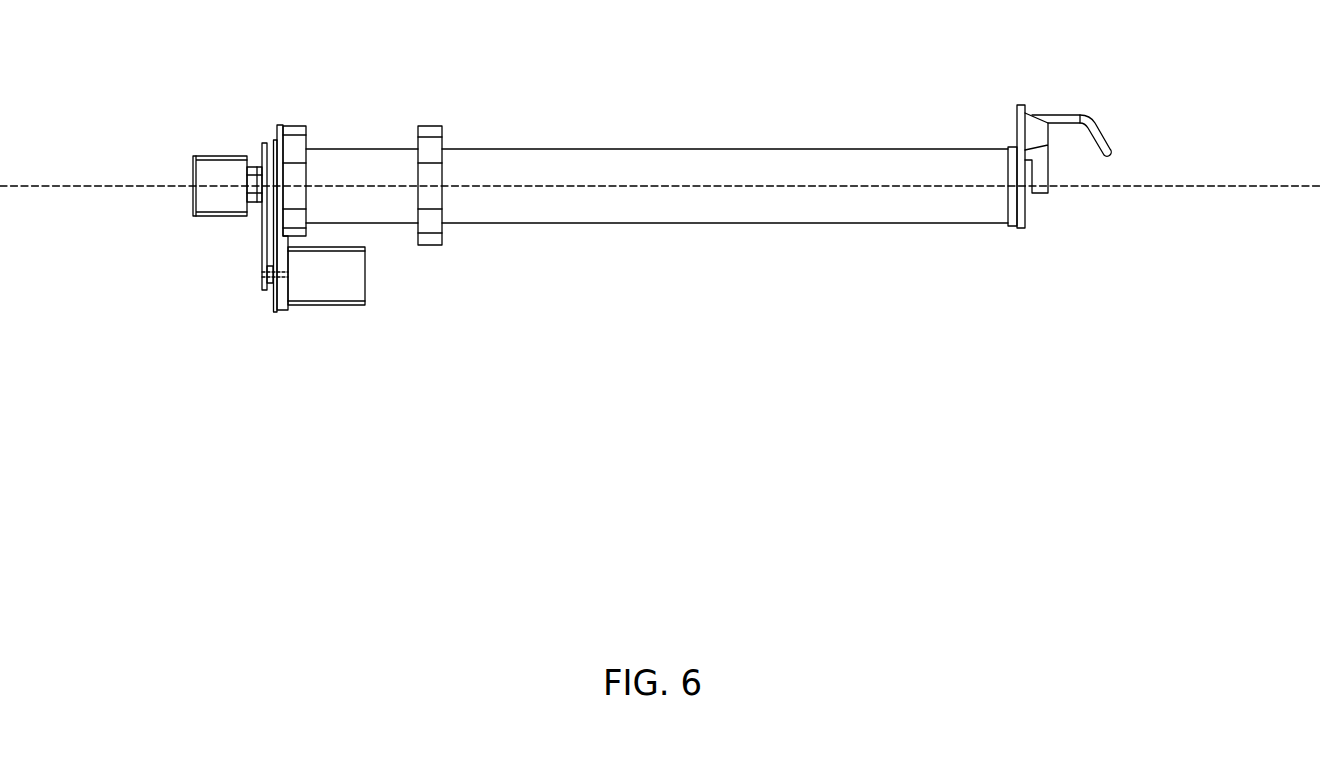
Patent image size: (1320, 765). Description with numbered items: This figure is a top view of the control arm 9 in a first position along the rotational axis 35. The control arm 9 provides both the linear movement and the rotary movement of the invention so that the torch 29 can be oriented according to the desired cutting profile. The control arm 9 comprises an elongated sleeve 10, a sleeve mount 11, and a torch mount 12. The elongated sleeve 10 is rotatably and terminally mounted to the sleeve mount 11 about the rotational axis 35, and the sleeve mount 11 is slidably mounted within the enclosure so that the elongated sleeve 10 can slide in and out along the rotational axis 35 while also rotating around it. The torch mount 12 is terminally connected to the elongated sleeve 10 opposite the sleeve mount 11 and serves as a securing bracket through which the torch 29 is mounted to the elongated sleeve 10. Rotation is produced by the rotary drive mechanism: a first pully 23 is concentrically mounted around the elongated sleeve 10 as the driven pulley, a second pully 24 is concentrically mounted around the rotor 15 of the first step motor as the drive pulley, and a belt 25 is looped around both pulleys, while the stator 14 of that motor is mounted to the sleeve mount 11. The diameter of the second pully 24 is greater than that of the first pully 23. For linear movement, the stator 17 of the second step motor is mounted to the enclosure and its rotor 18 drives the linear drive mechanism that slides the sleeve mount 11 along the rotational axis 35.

The control arm 9 is at (617, 118).
The elongated sleeve 10 is at (630, 218).
The sleeve mount 11 is at (426, 128).
The torch mount 12 is at (1021, 104).
The stator 14 is at (362, 293).
The rotor 15 is at (263, 275).
The stator 17 is at (197, 196).
The rotor 18 is at (250, 183).
The first pully 23 is at (263, 143).
The second pully 24 is at (264, 292).
The belt 25 is at (265, 253).
The torch 29 is at (1112, 152).
The rotational axis 35 is at (1138, 188).